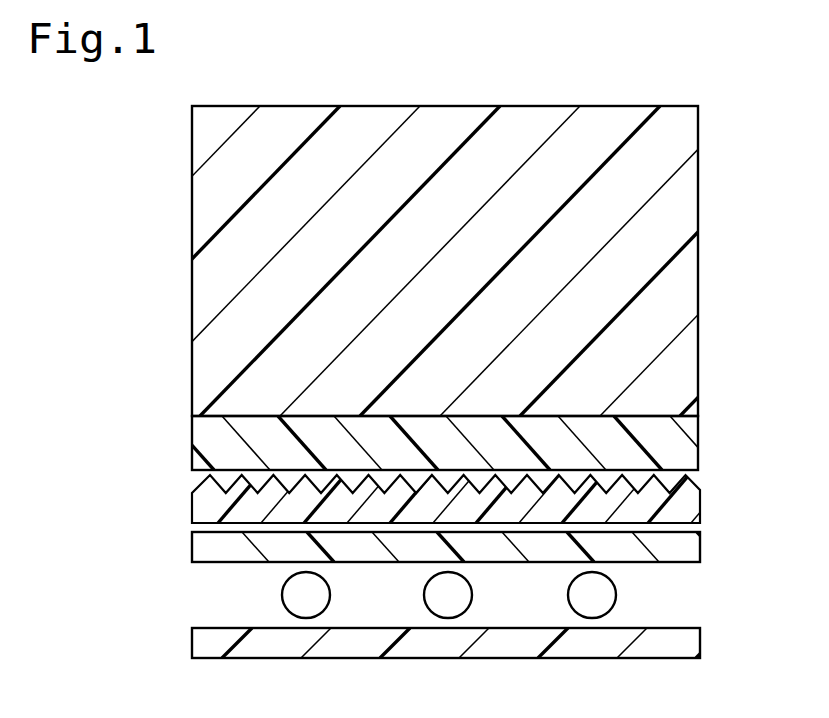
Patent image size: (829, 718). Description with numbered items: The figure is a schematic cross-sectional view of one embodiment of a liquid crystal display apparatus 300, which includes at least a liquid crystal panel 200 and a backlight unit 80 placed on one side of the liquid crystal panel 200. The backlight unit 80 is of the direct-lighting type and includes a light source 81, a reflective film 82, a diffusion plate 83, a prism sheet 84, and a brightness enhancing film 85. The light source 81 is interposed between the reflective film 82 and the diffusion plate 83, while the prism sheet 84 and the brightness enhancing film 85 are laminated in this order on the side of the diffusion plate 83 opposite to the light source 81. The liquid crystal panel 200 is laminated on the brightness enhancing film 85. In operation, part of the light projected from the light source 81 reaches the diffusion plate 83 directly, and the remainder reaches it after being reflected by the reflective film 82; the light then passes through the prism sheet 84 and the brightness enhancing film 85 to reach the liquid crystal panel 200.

The liquid crystal display apparatus 300 is at (633, 93).
The liquid crystal panel 200 is at (698, 256).
The backlight unit 80 is at (715, 416).
The brightness enhancing film 85 is at (192, 442).
The prism sheet 84 is at (192, 508).
The diffusion plate 83 is at (192, 548).
The light source 81 is at (286, 591).
The reflective film 82 is at (192, 647).